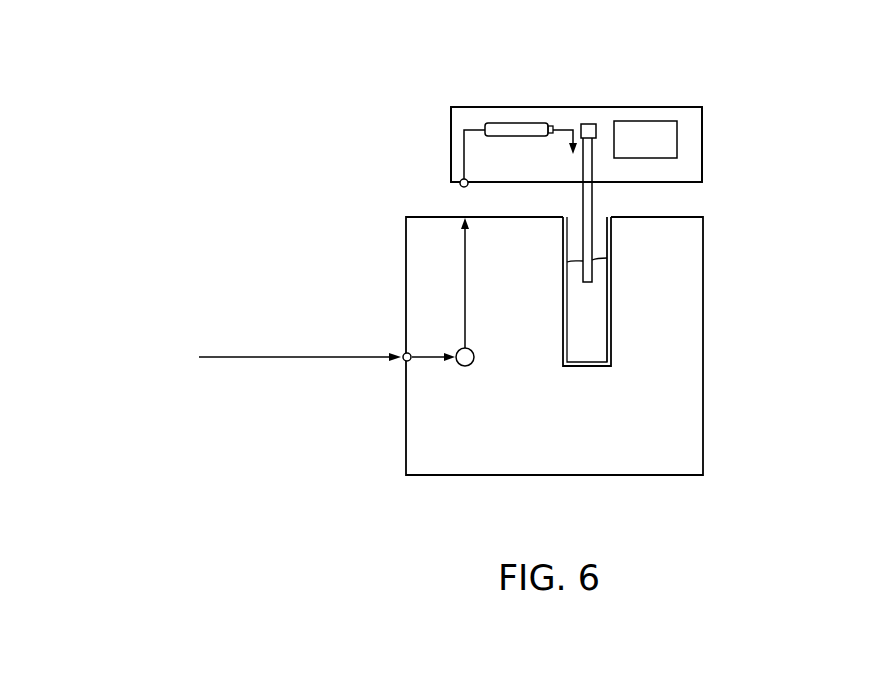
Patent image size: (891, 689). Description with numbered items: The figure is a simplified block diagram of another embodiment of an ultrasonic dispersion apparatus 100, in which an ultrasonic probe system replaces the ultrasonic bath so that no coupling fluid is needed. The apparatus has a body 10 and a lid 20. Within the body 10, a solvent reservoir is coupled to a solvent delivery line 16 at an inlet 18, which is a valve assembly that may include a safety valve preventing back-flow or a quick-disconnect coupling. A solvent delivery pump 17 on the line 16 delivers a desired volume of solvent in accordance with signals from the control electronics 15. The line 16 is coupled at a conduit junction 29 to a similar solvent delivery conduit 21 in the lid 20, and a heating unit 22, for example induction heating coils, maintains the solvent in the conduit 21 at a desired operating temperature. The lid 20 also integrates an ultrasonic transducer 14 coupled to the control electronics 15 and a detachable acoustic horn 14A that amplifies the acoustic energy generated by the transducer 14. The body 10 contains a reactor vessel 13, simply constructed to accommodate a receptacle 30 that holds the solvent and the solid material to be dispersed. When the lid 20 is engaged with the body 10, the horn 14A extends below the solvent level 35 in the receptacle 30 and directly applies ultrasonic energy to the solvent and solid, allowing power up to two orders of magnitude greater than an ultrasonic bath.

The dispersion apparatus 100 is at (790, 126).
The lid 20 is at (702, 128).
The control electronics 15 is at (634, 151).
The ultrasonic transducer 14 is at (588, 123).
The acoustic horn 14A is at (592, 207).
The solvent delivery conduit 21 is at (464, 154).
The heating unit 22 is at (513, 138).
The conduit junction 29 is at (460, 186).
The body 10 is at (704, 292).
The reactor vessel 13 is at (563, 345).
The solvent level 35 is at (567, 262).
The receptacle 30 is at (611, 258).
The solvent delivery line 16 is at (464, 312).
The solvent delivery pump 17 is at (458, 365).
The inlet 18 is at (405, 362).